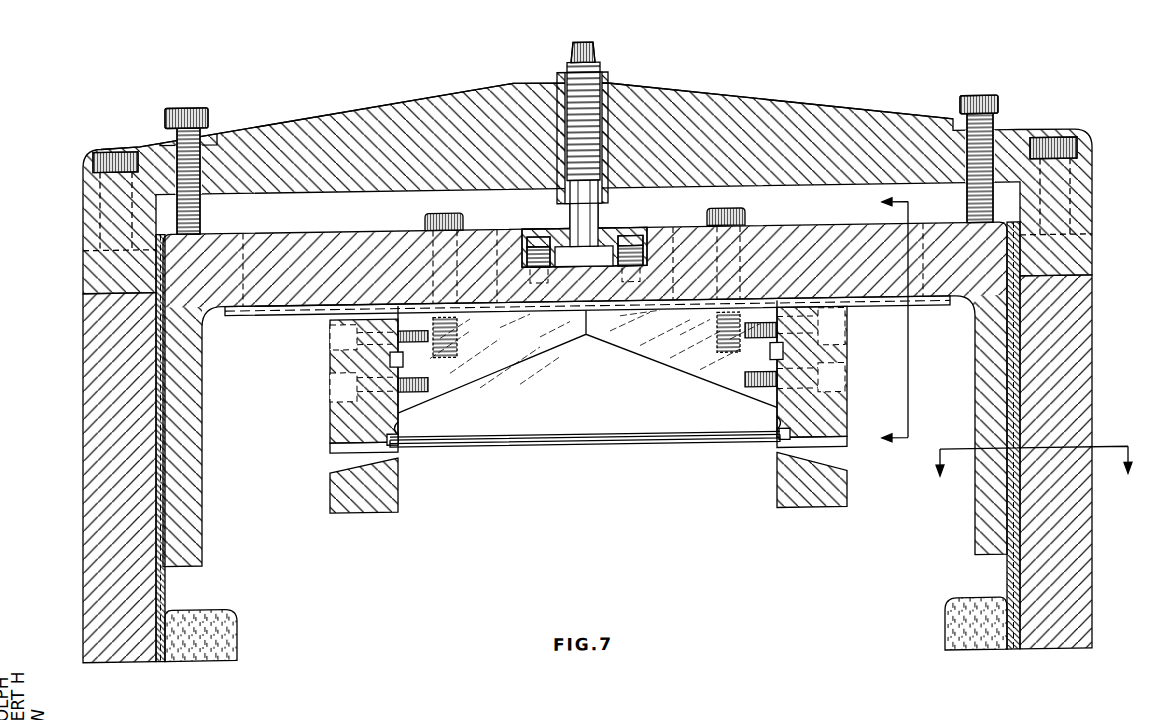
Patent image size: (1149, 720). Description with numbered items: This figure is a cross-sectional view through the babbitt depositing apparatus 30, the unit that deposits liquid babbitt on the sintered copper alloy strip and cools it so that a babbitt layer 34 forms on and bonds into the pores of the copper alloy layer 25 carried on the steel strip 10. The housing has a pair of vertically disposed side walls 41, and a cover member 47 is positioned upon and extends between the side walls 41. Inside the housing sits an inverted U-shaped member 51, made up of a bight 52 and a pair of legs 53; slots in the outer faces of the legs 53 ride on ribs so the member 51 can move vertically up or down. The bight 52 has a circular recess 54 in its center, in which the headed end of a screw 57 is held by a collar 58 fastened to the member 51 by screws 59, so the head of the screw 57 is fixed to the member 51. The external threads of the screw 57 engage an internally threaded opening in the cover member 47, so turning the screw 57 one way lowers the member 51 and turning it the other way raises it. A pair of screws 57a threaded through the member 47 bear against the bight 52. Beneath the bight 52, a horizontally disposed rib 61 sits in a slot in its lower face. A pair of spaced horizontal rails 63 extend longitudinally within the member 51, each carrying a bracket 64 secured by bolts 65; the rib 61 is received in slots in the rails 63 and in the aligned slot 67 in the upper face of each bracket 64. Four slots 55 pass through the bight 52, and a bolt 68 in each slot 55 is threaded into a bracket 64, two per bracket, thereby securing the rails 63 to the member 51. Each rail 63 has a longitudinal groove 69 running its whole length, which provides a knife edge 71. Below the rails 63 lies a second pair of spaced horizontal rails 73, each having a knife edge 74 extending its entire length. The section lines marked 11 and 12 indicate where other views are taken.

The steel strip 10 is at (693, 452).
The section line 11- 11 is at (1034, 472).
The section line 12- 12 is at (881, 320).
The copper alloy layer 25 is at (626, 449).
The babbitt depositing apparatus 30 is at (703, 92).
The babbitt layer 34 is at (534, 446).
The side walls 41 is at (94, 355).
The member 47 is at (840, 120).
The inverted U-shaped member 51 is at (691, 232).
The bight 52 is at (519, 238).
The legs 53 is at (193, 466).
The circular recess 54 is at (673, 248).
The slots 55 is at (258, 240).
The screw 57 is at (596, 65).
The screws 57a is at (197, 110).
The collar 58 is at (611, 249).
The screws 59 is at (549, 253).
The rib 61 is at (934, 327).
The rails 63 is at (343, 411).
The bracket 64 is at (515, 357).
The bolts 65 is at (342, 393).
The slot 67 is at (292, 320).
The bolts 68 is at (431, 232).
The groove 69 is at (338, 433).
The knife edge 71 is at (399, 437).
The rails 73 is at (342, 497).
The knife edge 74 is at (400, 453).